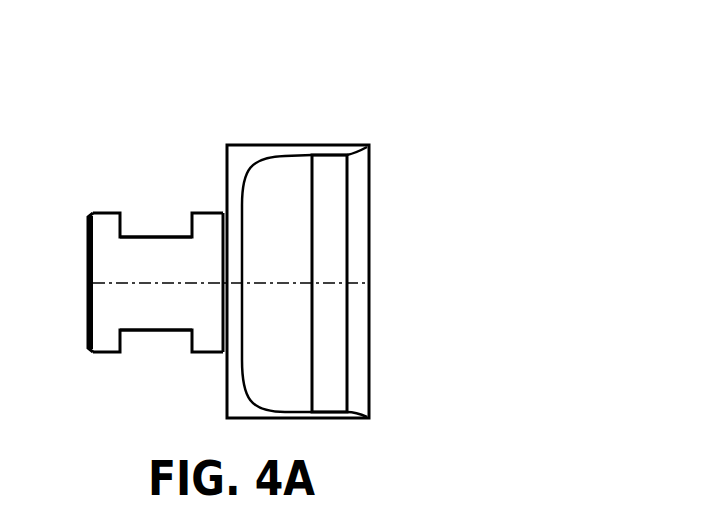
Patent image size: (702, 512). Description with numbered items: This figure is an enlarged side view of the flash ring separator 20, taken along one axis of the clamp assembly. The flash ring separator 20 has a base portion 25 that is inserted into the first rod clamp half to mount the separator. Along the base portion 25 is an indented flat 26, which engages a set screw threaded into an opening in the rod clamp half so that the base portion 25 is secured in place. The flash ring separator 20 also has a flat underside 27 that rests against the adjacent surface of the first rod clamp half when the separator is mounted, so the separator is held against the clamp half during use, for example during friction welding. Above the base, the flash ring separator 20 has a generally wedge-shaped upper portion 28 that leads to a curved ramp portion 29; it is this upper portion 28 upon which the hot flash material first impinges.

The flash ring separator 20 is at (474, 188).
The base portion 25 is at (108, 212).
The indented flat 26 is at (158, 226).
The flat underside 27 is at (224, 175).
The upper portion 28 is at (336, 183).
The curved ramp portion 29 is at (270, 200).